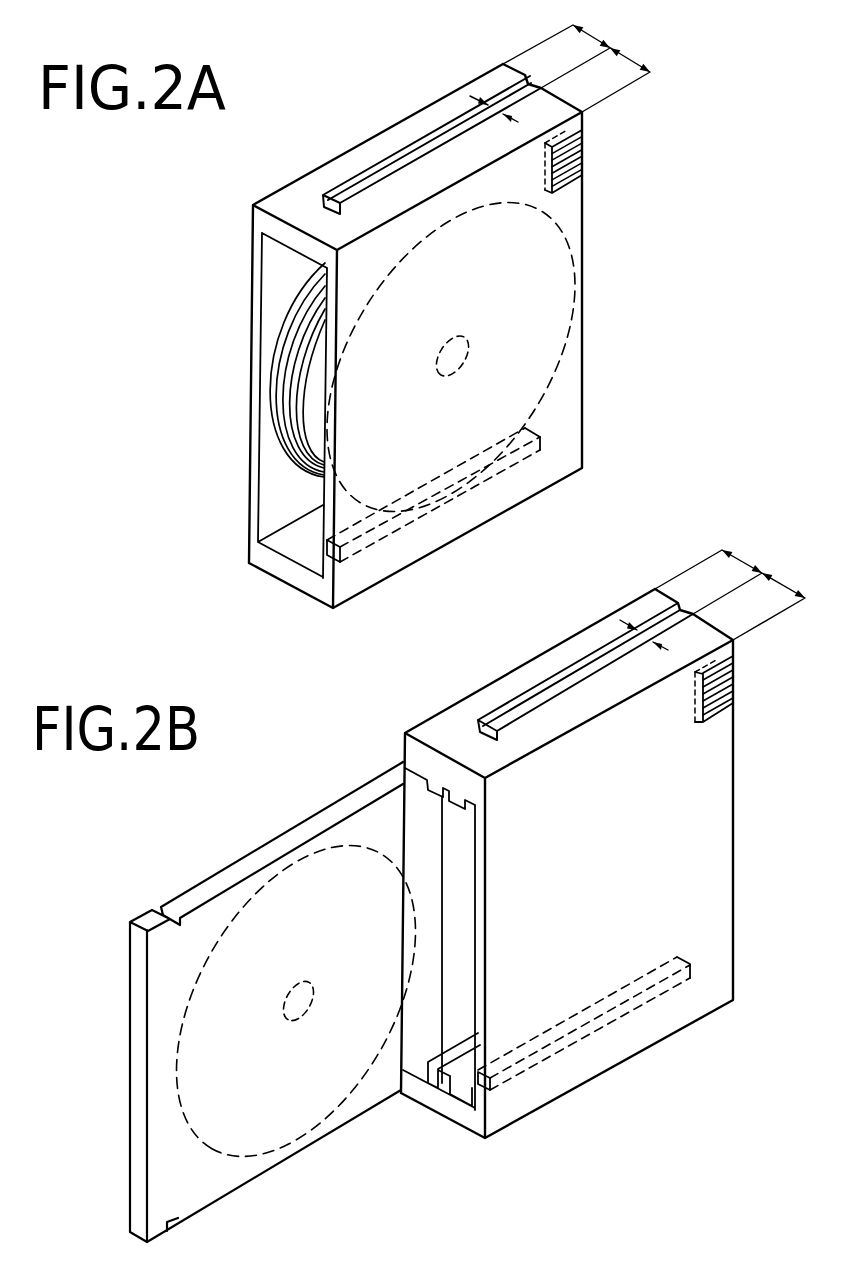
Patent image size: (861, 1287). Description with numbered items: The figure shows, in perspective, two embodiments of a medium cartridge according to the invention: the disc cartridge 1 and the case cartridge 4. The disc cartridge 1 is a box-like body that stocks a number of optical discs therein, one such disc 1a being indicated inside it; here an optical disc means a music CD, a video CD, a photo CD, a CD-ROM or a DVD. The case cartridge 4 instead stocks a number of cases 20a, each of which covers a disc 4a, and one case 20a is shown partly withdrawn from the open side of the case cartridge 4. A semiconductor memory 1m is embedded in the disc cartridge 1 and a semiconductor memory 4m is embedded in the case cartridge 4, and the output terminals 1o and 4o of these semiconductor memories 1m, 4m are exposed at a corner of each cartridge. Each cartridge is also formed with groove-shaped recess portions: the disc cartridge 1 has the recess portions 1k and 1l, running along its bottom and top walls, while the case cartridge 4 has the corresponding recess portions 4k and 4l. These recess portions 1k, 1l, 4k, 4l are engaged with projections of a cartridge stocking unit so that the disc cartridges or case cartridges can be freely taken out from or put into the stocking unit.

In FIG. 2A, the disc cartridge 1 is at (280, 202).
In FIG. 2A, the disc 1a is at (272, 388).
In FIG. 2A, the groove-shaped recess portion 1k is at (390, 510).
In FIG. 2A, the groove-shaped recess portion 1l is at (411, 160).
In FIG. 2A, the semiconductor memory 1m is at (560, 193).
In FIG. 2A, the output terminals 1o is at (584, 123).
In FIG. 2B, the case cartridge 4 is at (418, 724).
In FIG. 2B, the disc 4a is at (350, 1098).
In FIG. 2B, the groove-shaped recess portion 4k is at (545, 1045).
In FIG. 2B, the groove-shaped recess portion 4l is at (507, 705).
In FIG. 2B, the semiconductor memory 4m is at (710, 727).
In FIG. 2B, the output terminals 4o is at (735, 663).
In FIG. 2B, the case 20a is at (220, 882).